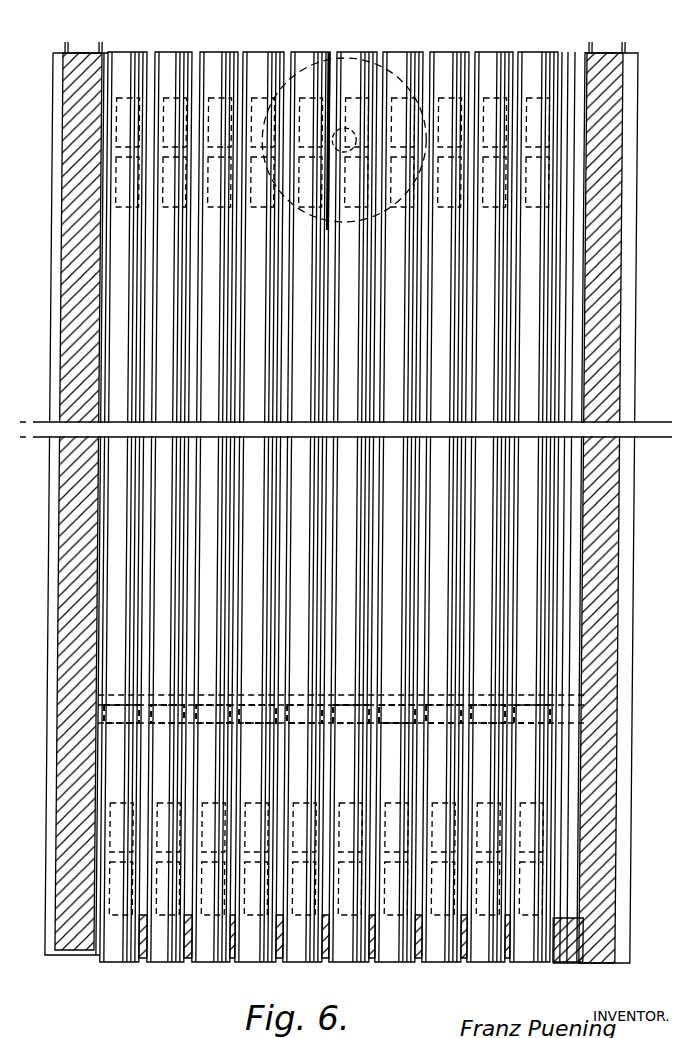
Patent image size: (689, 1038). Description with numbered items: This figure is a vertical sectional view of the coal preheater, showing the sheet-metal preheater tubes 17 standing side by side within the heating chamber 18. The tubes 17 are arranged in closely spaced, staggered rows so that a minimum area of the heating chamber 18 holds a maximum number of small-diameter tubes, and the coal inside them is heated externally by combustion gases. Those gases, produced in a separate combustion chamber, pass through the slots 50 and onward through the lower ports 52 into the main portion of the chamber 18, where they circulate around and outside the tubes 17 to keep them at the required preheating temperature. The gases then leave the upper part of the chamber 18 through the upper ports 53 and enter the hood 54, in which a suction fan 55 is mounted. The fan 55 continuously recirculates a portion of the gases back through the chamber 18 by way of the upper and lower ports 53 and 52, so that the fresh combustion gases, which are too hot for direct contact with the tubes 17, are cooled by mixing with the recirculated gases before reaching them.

The preheater tubes 17 is at (168, 532).
The heating chamber 18 is at (76, 214).
The slots 50 is at (110, 706).
The ports 52 is at (490, 836).
The ports 53 is at (215, 105).
The hood 54 is at (383, 82).
The suction fan 55 is at (320, 52).